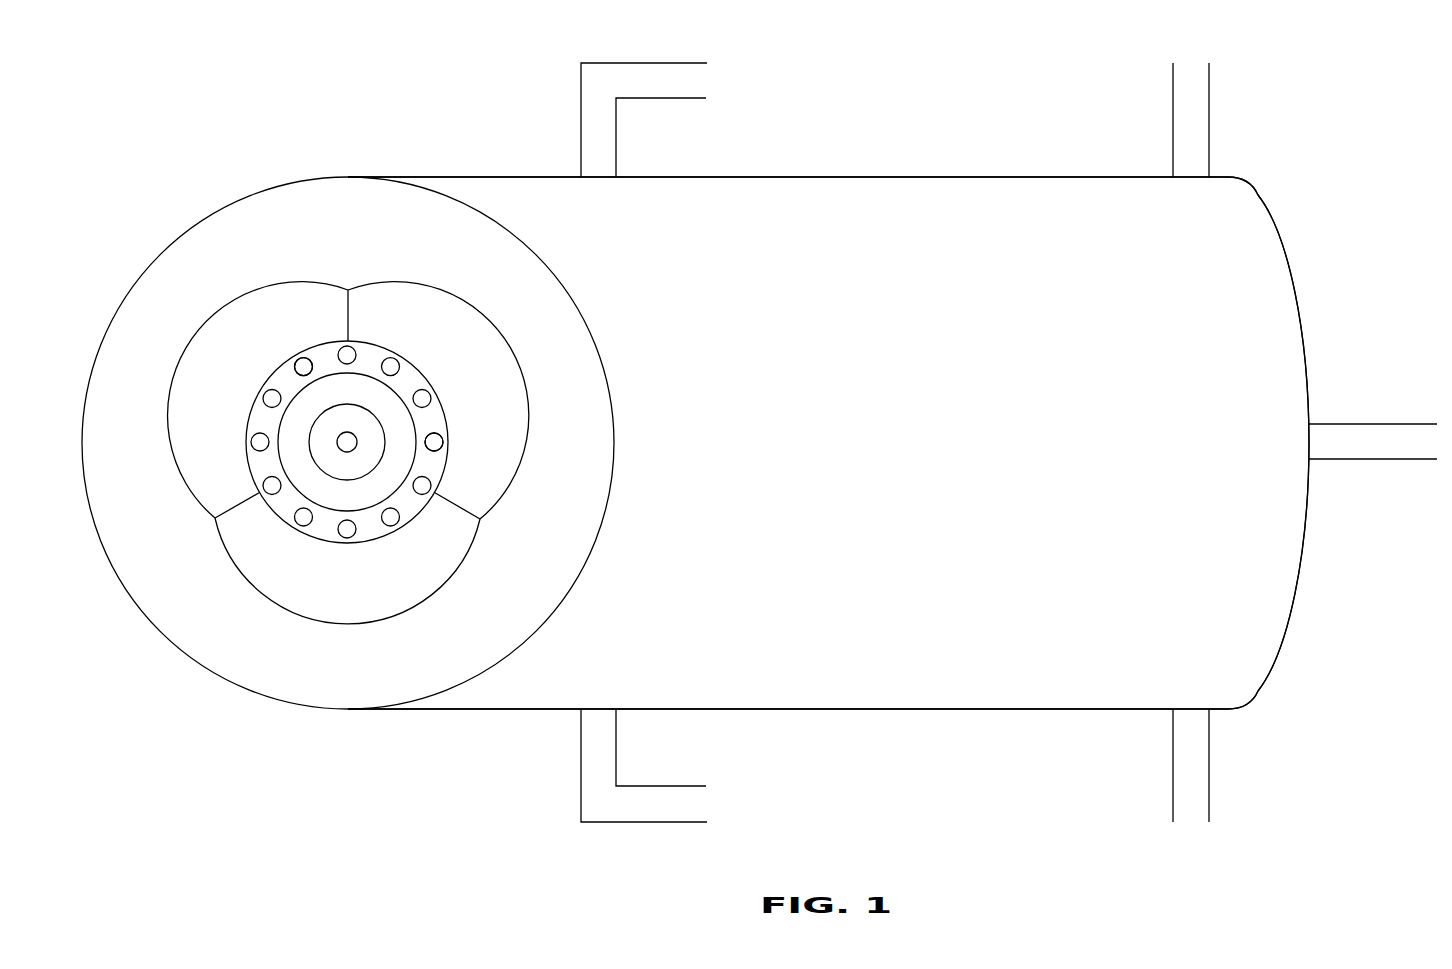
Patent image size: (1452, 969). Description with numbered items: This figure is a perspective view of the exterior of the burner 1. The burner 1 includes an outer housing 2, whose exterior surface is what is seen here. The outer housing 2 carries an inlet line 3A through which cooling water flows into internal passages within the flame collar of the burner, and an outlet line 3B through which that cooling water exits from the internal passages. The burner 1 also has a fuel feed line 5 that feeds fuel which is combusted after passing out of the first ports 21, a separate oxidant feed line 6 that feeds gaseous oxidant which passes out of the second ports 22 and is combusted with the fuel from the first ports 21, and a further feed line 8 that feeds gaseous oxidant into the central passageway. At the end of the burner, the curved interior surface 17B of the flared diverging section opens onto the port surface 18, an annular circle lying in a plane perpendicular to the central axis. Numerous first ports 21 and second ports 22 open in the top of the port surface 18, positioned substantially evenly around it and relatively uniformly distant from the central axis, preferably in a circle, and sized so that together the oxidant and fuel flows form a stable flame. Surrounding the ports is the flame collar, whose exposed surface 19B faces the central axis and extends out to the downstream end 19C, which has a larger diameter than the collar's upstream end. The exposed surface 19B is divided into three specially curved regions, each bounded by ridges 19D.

The burner 1 is at (848, 153).
The outer housing 2 is at (914, 428).
The inlet line 3A is at (665, 120).
The outlet line 3B is at (655, 765).
The fuel feed line 5 is at (1191, 107).
The oxidant feed line 6 is at (1191, 777).
The feed line 8 is at (1380, 441).
The interior surface of flared diverging section 17B is at (295, 437).
The port surface 18 is at (325, 357).
The exposed surface of flame collar 19B is at (254, 352).
The downstream end of flame collar 19C is at (252, 261).
The ridges 19D is at (350, 316).
The first ports 21 is at (424, 394).
The second ports 22 is at (300, 369).